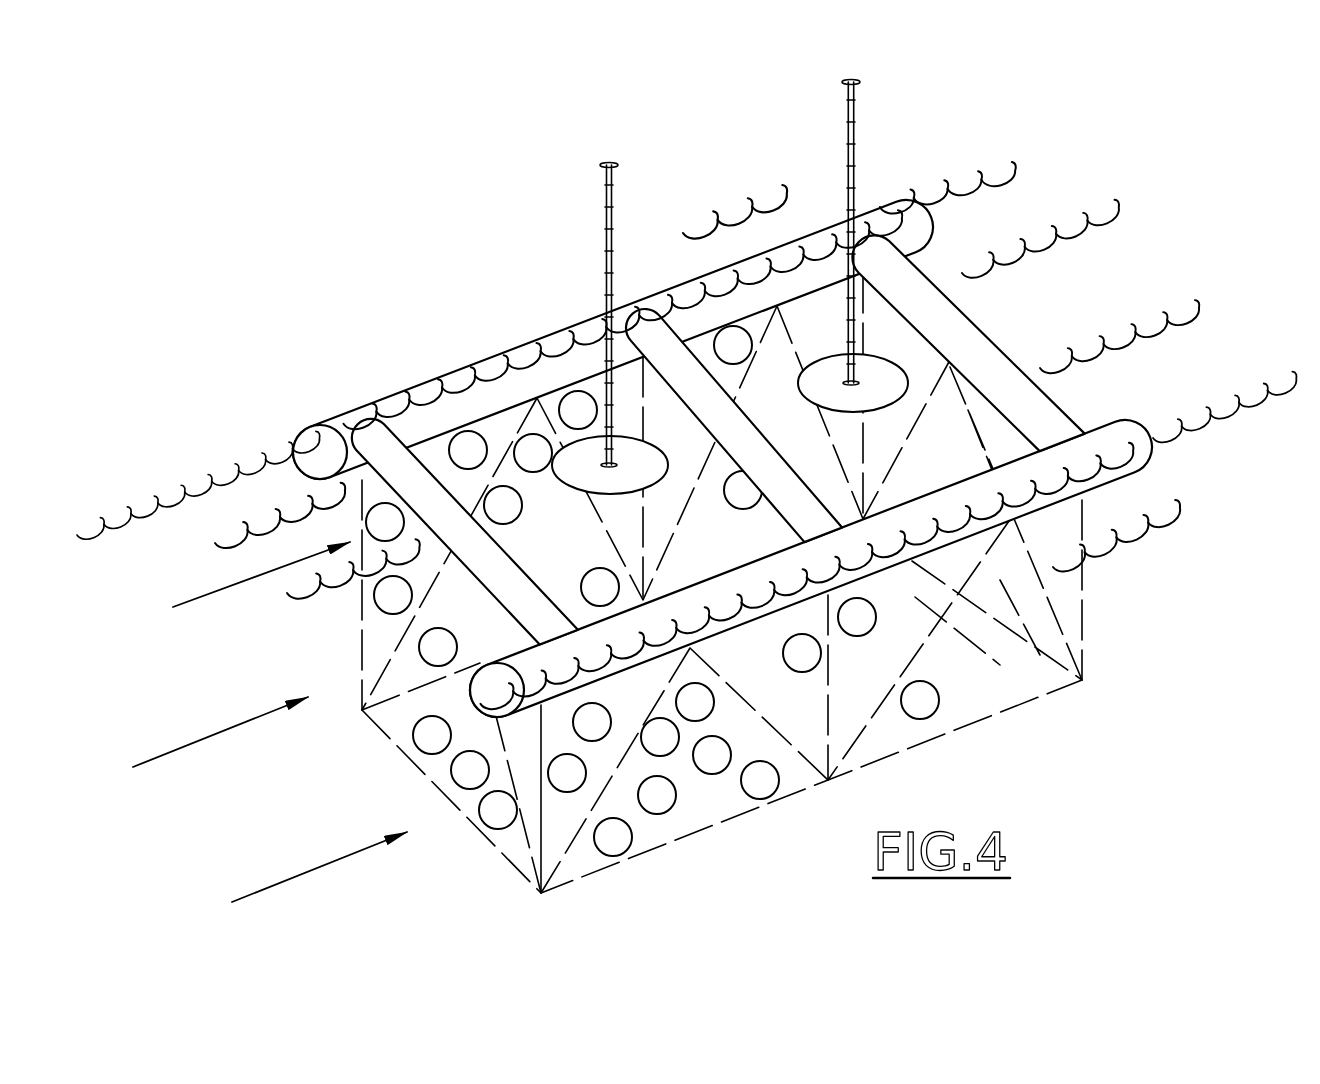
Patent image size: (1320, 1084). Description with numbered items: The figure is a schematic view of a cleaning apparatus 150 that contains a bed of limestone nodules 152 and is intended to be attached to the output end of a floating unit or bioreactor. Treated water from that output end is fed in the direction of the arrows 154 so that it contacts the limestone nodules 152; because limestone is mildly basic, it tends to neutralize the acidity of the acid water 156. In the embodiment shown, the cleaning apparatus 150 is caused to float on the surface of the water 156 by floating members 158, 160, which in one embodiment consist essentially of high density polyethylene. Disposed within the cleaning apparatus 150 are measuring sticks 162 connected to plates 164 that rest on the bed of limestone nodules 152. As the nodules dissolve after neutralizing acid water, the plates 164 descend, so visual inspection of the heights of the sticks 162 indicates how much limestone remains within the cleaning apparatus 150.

The cleaning apparatus 150 is at (693, 207).
The limestone nodules 152 is at (940, 693).
The arrows 154 is at (252, 580).
The acid water 156 is at (1093, 400).
The floating member 158 is at (528, 352).
The floating member 160 is at (495, 570).
The measuring sticks 162 is at (607, 222).
The plates 164 is at (585, 491).